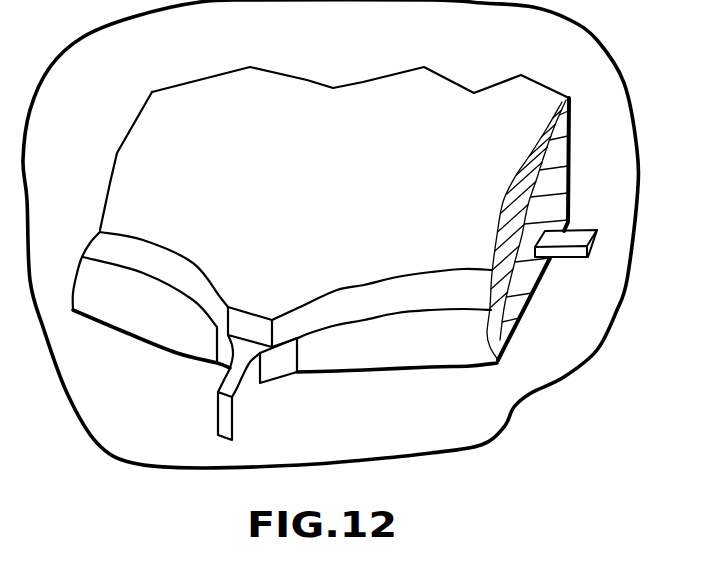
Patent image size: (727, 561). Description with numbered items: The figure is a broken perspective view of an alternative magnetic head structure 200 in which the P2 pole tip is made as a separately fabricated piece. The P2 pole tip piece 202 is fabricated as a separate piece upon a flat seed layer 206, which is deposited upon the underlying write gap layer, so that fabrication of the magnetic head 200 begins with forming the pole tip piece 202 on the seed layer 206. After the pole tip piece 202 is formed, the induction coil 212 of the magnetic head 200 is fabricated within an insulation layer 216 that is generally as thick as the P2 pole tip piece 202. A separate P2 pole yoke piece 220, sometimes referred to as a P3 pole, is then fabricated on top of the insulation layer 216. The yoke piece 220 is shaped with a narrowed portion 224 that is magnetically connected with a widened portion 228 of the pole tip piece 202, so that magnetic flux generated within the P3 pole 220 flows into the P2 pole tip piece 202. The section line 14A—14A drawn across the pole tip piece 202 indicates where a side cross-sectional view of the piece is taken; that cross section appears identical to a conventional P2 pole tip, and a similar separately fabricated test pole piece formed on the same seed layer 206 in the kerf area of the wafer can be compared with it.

The magnetic head structure 200 is at (429, 57).
The P2 pole tip piece 202 is at (243, 405).
The seed layer 206 is at (98, 43).
The induction coil 212 is at (577, 235).
The insulation layer 216 is at (525, 278).
The P2 pole yoke piece 220 is at (208, 88).
The narrowed portion 224 is at (248, 325).
The widened portion 228 is at (283, 367).
The section line 14A— 14A is at (203, 427).